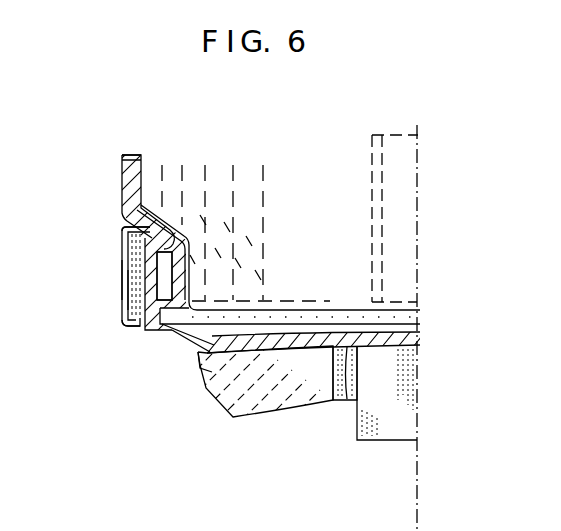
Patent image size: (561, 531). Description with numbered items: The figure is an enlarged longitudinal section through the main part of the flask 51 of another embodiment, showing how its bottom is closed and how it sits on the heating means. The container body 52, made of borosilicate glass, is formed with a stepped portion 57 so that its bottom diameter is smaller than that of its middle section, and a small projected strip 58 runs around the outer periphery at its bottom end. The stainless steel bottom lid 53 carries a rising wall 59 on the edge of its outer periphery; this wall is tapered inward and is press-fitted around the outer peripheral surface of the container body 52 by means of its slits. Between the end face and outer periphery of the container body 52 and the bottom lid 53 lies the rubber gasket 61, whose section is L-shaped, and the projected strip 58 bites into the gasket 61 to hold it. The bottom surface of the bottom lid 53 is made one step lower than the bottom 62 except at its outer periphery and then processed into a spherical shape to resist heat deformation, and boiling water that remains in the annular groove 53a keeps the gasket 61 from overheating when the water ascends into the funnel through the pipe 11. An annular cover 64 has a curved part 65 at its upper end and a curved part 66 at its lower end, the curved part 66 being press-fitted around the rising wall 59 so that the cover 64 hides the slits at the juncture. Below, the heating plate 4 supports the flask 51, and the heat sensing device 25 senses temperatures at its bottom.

The heating plate 4 is at (253, 412).
The pipe 11 is at (383, 170).
The heat sensing device 25 is at (398, 398).
The flask 51 is at (108, 185).
The container body 52 is at (141, 166).
The bottom lid 53 is at (345, 392).
The annular groove 53a is at (215, 372).
The stepped portion 57 is at (180, 233).
The projected strip 58 is at (150, 338).
The rising wall 59 is at (126, 291).
The gasket 61 is at (124, 256).
The bottom 62 is at (196, 345).
The cover 64 is at (121, 277).
The curved part 65 is at (120, 229).
The curved part 66 is at (126, 327).